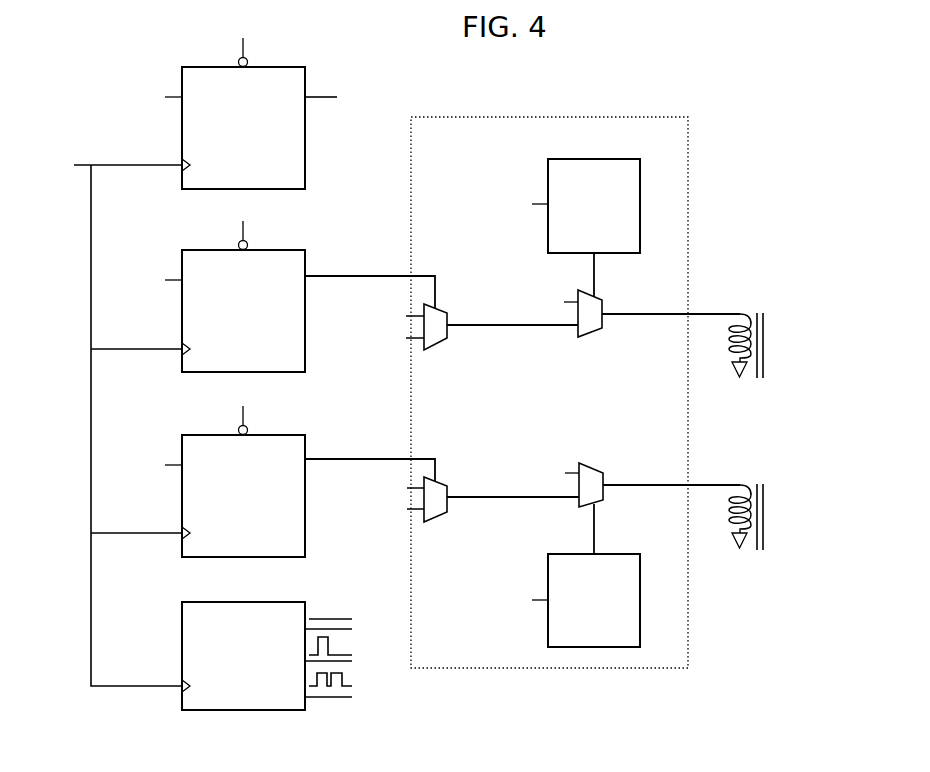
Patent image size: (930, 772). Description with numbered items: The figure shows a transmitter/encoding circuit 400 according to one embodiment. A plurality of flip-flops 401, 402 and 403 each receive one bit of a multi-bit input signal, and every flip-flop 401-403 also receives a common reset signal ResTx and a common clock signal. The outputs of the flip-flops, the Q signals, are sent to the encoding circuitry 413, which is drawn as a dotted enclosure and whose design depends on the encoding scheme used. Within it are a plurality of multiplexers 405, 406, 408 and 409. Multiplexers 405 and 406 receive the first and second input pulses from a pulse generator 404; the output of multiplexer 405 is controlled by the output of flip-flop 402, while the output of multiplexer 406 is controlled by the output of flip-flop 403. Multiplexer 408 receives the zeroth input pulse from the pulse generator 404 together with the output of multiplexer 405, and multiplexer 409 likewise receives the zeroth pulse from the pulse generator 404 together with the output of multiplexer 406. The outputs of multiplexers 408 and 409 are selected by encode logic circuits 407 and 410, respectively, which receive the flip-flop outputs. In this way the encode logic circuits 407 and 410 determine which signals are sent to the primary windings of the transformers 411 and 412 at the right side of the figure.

The transmitter/encoding circuit 400 is at (146, 50).
The flip-flop 401 is at (273, 67).
The flip-flop 402 is at (273, 250).
The flip-flop 403 is at (273, 435).
The pulse generator 404 is at (273, 602).
The multiplexer 405 is at (438, 306).
The multiplexer 406 is at (438, 479).
The encode logic circuit 407 is at (611, 159).
The multiplexer 408 is at (598, 298).
The multiplexer 409 is at (588, 463).
The encode logic circuit 410 is at (611, 554).
The transformer 411 is at (742, 313).
The transformer 412 is at (742, 484).
The encoding circuitry 413 is at (549, 392).